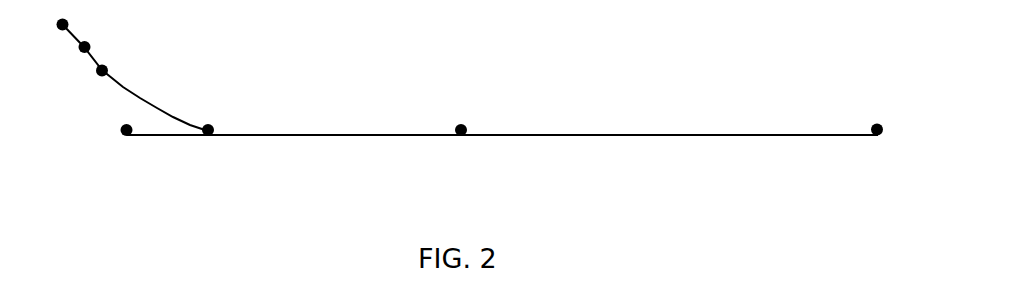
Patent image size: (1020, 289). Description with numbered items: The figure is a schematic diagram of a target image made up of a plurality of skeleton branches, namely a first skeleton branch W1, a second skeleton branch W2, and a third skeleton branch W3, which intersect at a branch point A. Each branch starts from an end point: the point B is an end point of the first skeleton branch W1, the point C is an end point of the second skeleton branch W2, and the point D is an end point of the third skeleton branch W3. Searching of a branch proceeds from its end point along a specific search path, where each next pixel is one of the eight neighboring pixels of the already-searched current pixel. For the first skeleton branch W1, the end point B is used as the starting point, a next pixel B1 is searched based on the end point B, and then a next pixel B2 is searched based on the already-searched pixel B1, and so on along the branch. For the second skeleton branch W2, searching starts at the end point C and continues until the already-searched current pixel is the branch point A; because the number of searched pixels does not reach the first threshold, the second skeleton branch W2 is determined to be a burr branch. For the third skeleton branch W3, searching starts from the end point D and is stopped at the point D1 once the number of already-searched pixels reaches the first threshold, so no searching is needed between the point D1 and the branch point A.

The branch point A is at (214, 148).
The end point B is at (47, 25).
The next pixel B1 is at (67, 52).
The next pixel B2 is at (85, 82).
The end point C is at (95, 150).
The end point D is at (884, 160).
The already-searched current pixel D1 is at (460, 146).
The first skeleton branch W1 is at (135, 77).
The second skeleton branch W2 is at (167, 153).
The third skeleton branch W3 is at (543, 165).